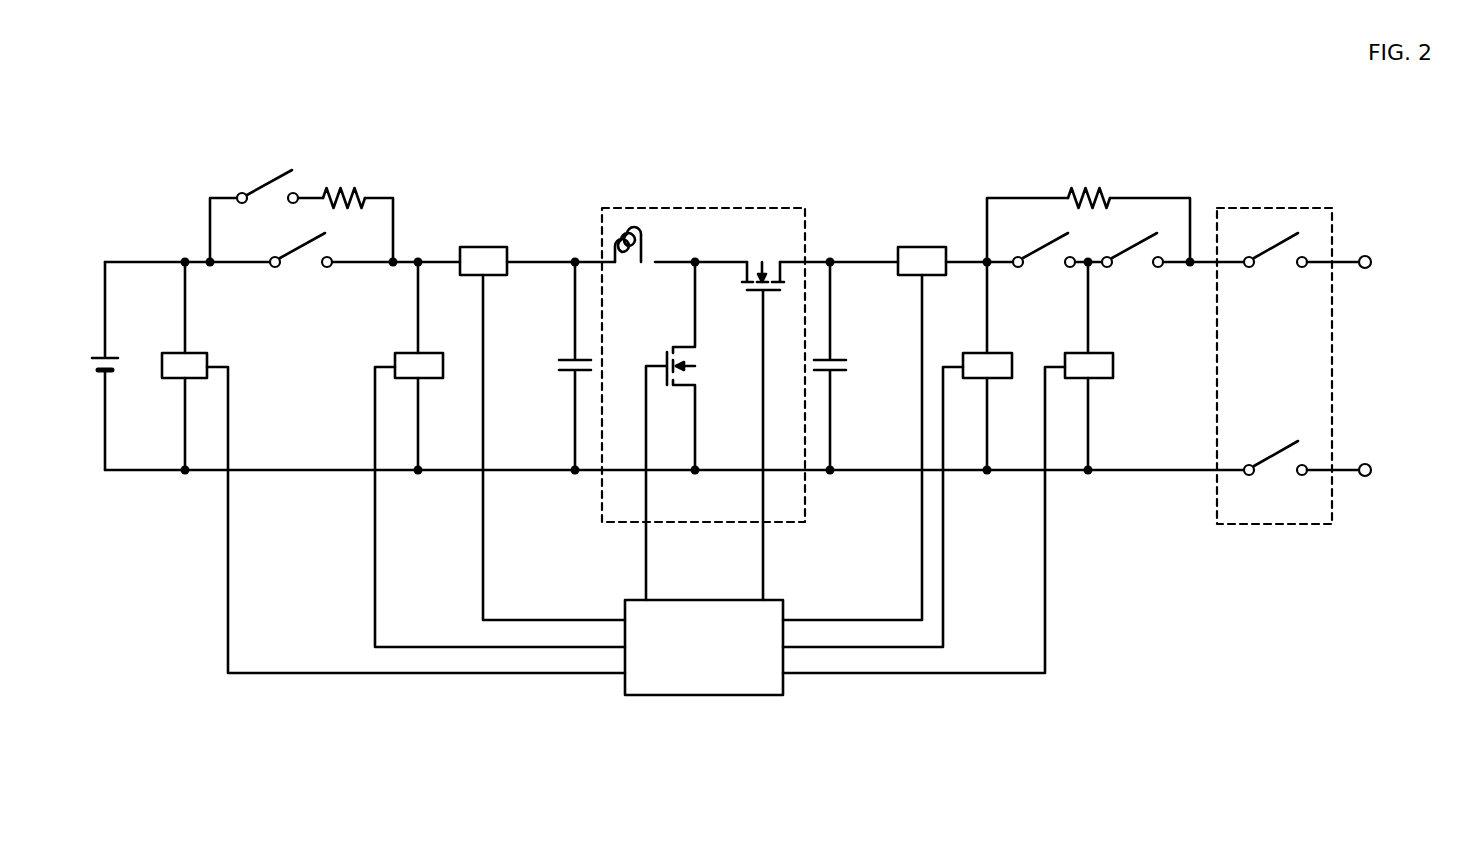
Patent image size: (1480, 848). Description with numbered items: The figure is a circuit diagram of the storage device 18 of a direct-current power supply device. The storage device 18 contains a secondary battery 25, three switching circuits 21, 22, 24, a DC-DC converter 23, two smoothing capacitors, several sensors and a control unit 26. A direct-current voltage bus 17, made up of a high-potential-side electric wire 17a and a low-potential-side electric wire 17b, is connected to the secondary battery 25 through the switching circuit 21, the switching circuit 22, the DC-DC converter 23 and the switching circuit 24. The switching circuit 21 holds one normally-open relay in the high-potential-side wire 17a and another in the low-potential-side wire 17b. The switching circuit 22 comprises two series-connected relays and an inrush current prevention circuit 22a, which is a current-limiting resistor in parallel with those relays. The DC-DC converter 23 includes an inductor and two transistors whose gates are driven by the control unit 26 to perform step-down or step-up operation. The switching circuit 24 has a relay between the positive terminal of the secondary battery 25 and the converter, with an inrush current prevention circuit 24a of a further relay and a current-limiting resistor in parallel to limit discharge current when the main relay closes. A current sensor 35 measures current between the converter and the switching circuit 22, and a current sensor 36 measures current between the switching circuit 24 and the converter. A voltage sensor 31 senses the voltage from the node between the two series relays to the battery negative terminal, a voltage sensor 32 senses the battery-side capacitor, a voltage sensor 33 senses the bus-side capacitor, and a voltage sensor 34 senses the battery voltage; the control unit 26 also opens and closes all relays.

The direct-current voltage bus 17 is at (1351, 327).
The high-potential-side electric wire 17a is at (1366, 254).
The low-potential-side electric wire 17b is at (1366, 462).
The storage device 18 is at (1289, 80).
The switching circuit 21 is at (1277, 208).
The switching circuit 22 is at (1172, 131).
The inrush current prevention circuit 22a is at (1120, 168).
The DC-DC converter 23 is at (706, 208).
The switching circuit 24 is at (427, 133).
The inrush current prevention circuit 24a is at (375, 169).
The secondary battery 25 is at (112, 352).
The control unit 26 is at (693, 598).
The voltage sensor 31 is at (1098, 352).
The voltage sensor 32 is at (998, 352).
The voltage sensor 33 is at (427, 352).
The voltage sensor 34 is at (194, 352).
The current sensor 35 is at (923, 247).
The current sensor 36 is at (486, 247).